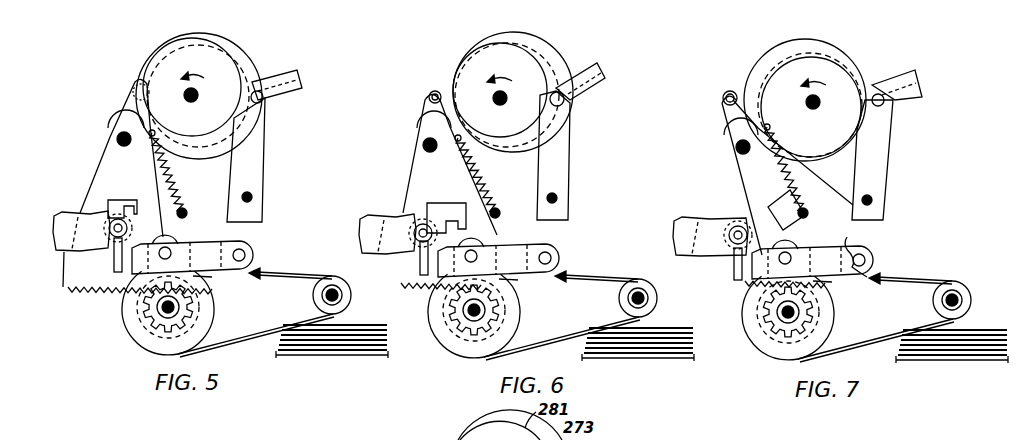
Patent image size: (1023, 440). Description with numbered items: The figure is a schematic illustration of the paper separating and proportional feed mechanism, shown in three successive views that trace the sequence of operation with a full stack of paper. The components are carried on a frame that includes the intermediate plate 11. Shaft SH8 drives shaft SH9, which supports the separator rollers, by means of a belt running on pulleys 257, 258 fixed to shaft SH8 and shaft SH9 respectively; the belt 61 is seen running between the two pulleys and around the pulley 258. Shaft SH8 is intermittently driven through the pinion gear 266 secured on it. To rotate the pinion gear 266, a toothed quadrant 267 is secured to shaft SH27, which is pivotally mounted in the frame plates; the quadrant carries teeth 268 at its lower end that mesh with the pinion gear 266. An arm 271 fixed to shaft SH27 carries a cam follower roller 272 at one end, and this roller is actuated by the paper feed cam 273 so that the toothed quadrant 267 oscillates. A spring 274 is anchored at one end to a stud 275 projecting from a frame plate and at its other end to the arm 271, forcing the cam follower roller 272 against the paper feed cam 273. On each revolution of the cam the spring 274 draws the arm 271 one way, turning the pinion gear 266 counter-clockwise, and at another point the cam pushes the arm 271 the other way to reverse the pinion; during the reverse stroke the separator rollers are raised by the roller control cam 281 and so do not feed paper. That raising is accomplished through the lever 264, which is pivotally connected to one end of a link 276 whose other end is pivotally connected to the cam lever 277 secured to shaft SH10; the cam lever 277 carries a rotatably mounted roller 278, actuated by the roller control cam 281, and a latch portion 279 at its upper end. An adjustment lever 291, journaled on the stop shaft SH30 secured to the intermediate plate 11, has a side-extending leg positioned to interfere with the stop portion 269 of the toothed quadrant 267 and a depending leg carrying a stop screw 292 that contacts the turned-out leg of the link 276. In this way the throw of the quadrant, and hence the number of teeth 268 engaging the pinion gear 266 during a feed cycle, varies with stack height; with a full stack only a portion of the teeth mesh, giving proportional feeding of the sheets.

In FIG. 5, the intermediate plate 11 is at (53, 232).
In FIG. 6, the intermediate plate 11 is at (378, 234).
In FIG. 7, the intermediate plate 11 is at (699, 236).
In FIG. 5, the belt 61 is at (323, 272).
In FIG. 6, the belt 61 is at (562, 312).
In FIG. 7, the belt 61 is at (876, 310).
In FIG. 5, the pulley 257 is at (147, 343).
In FIG. 6, the pulley 257 is at (466, 321).
In FIG. 7, the pulley 257 is at (782, 324).
In FIG. 5, the pulley 258 is at (313, 298).
In FIG. 6, the pulley 258 is at (617, 298).
In FIG. 7, the pulley 258 is at (930, 300).
In FIG. 5, the lever 264 is at (192, 254).
In FIG. 6, the lever 264 is at (498, 257).
In FIG. 7, the lever 264 is at (812, 259).
In FIG. 5, the pinion gear 266 is at (127, 318).
In FIG. 6, the pinion gear 266 is at (451, 313).
In FIG. 7, the pinion gear 266 is at (768, 316).
In FIG. 5, the toothed quadrant 267 is at (96, 172).
In FIG. 6, the toothed quadrant 267 is at (409, 144).
In FIG. 7, the toothed quadrant 267 is at (721, 179).
In FIG. 5, the teeth 268 is at (160, 224).
In FIG. 6, the teeth 268 is at (490, 184).
In FIG. 7, the teeth 268 is at (839, 202).
In FIG. 5, the stop portion 269 is at (134, 199).
In FIG. 6, the stop portion 269 is at (444, 206).
In FIG. 7, the stop portion 269 is at (775, 206).
In FIG. 5, the arm 271 is at (122, 108).
In FIG. 6, the arm 271 is at (416, 154).
In FIG. 7, the arm 271 is at (719, 112).
In FIG. 5, the cam follower roller 272 is at (133, 86).
In FIG. 6, the cam follower roller 272 is at (419, 88).
In FIG. 7, the cam follower roller 272 is at (713, 91).
In FIG. 5, the paper feed cam 273 is at (248, 49).
In FIG. 6, the paper feed cam 273 is at (521, 91).
In FIG. 7, the paper feed cam 273 is at (809, 97).
In FIG. 5, the spring 274 is at (170, 166).
In FIG. 6, the spring 274 is at (489, 174).
In FIG. 7, the spring 274 is at (805, 168).
In FIG. 5, the stud 275 is at (186, 210).
In FIG. 6, the stud 275 is at (513, 207).
In FIG. 7, the stud 275 is at (822, 208).
In FIG. 5, the link 276 is at (217, 273).
In FIG. 6, the link 276 is at (528, 286).
In FIG. 7, the link 276 is at (843, 288).
In FIG. 5, the cam lever 277 is at (270, 133).
In FIG. 6, the cam lever 277 is at (577, 155).
In FIG. 7, the cam lever 277 is at (895, 160).
In FIG. 5, the roller 278 is at (265, 102).
In FIG. 6, the roller 278 is at (583, 106).
In FIG. 7, the roller 278 is at (905, 109).
In FIG. 5, the latch portion 279 is at (288, 78).
In FIG. 6, the latch portion 279 is at (582, 77).
In FIG. 7, the latch portion 279 is at (897, 78).
In FIG. 5, the roller control cam 281 is at (213, 50).
In FIG. 6, the roller control cam 281 is at (508, 77).
In FIG. 7, the roller control cam 281 is at (811, 89).
In FIG. 5, the adjustment lever 291 is at (111, 258).
In FIG. 6, the adjustment lever 291 is at (398, 258).
In FIG. 7, the adjustment lever 291 is at (717, 264).
In FIG. 5, the stop screw 292 is at (101, 291).
In FIG. 6, the stop screw 292 is at (424, 279).
In FIG. 7, the stop screw 292 is at (758, 283).
In FIG. 5, the shaft SH8 is at (182, 307).
In FIG. 6, the shaft SH8 is at (507, 310).
In FIG. 7, the shaft SH8 is at (819, 312).
In FIG. 5, the shaft SH9 is at (346, 300).
In FIG. 6, the shaft SH9 is at (666, 305).
In FIG. 7, the shaft SH9 is at (980, 306).
In FIG. 5, the shaft SH10 is at (252, 197).
In FIG. 6, the shaft SH10 is at (582, 197).
In FIG. 7, the shaft SH10 is at (899, 198).
In FIG. 5, the shaft SH27 is at (117, 133).
In FIG. 6, the shaft SH27 is at (401, 139).
In FIG. 7, the shaft SH27 is at (715, 141).
In FIG. 5, the stop shaft SH30 is at (108, 224).
In FIG. 6, the stop shaft SH30 is at (396, 221).
In FIG. 7, the stop shaft SH30 is at (721, 223).